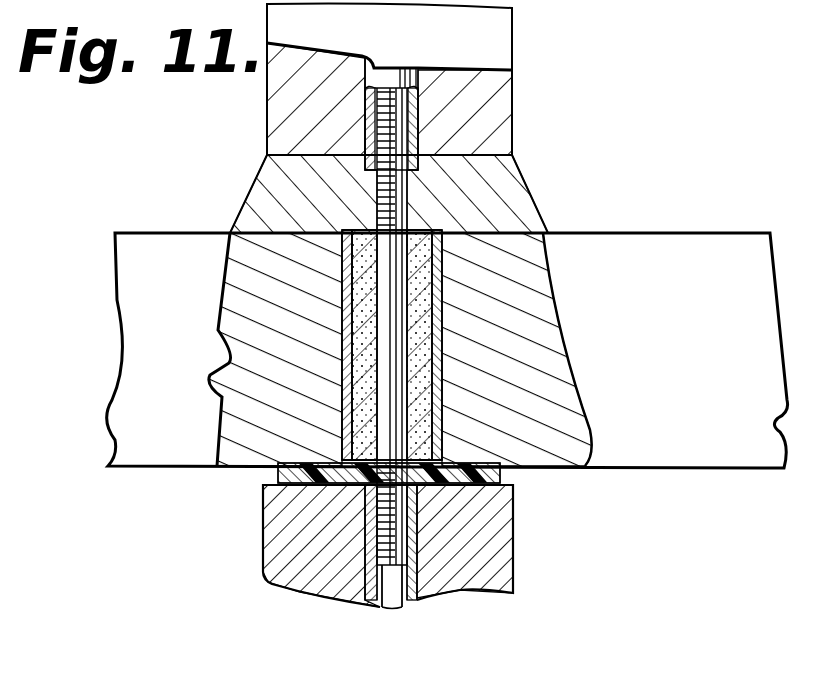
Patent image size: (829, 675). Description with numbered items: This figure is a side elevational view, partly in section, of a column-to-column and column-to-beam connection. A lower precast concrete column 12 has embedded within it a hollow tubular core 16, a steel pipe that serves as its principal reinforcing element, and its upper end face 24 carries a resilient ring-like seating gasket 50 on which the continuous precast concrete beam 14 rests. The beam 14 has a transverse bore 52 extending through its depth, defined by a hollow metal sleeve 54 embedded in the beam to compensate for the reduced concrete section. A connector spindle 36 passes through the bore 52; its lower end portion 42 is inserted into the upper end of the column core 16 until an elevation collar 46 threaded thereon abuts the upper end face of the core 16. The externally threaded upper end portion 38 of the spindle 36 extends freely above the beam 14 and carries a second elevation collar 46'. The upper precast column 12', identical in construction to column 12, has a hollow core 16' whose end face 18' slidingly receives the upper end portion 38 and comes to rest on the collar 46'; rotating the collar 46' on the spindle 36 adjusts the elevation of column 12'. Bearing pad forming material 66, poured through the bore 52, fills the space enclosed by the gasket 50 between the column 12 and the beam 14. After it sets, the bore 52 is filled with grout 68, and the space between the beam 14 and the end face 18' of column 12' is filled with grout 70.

The precast concrete column 12 is at (418, 546).
The precast concrete column 12' is at (436, 80).
The precast concrete beam 14 is at (563, 383).
The hollow tubular core 16 is at (431, 606).
The hollow core 16' is at (394, 58).
The core end face 18' is at (436, 161).
The column end face 24 is at (282, 478).
The connector spindle 36 is at (418, 405).
The upper end portion 38 is at (430, 66).
The lower end portion 42 is at (390, 570).
The elevation collar 46 is at (472, 542).
The second elevation collar 46' is at (471, 123).
The seating gasket 50 is at (498, 480).
The bore 52 is at (352, 222).
The hollow metal sleeve 54 is at (443, 249).
The bearing pad forming material 66 is at (455, 462).
The grout 68 is at (427, 310).
The grout 70 is at (513, 198).